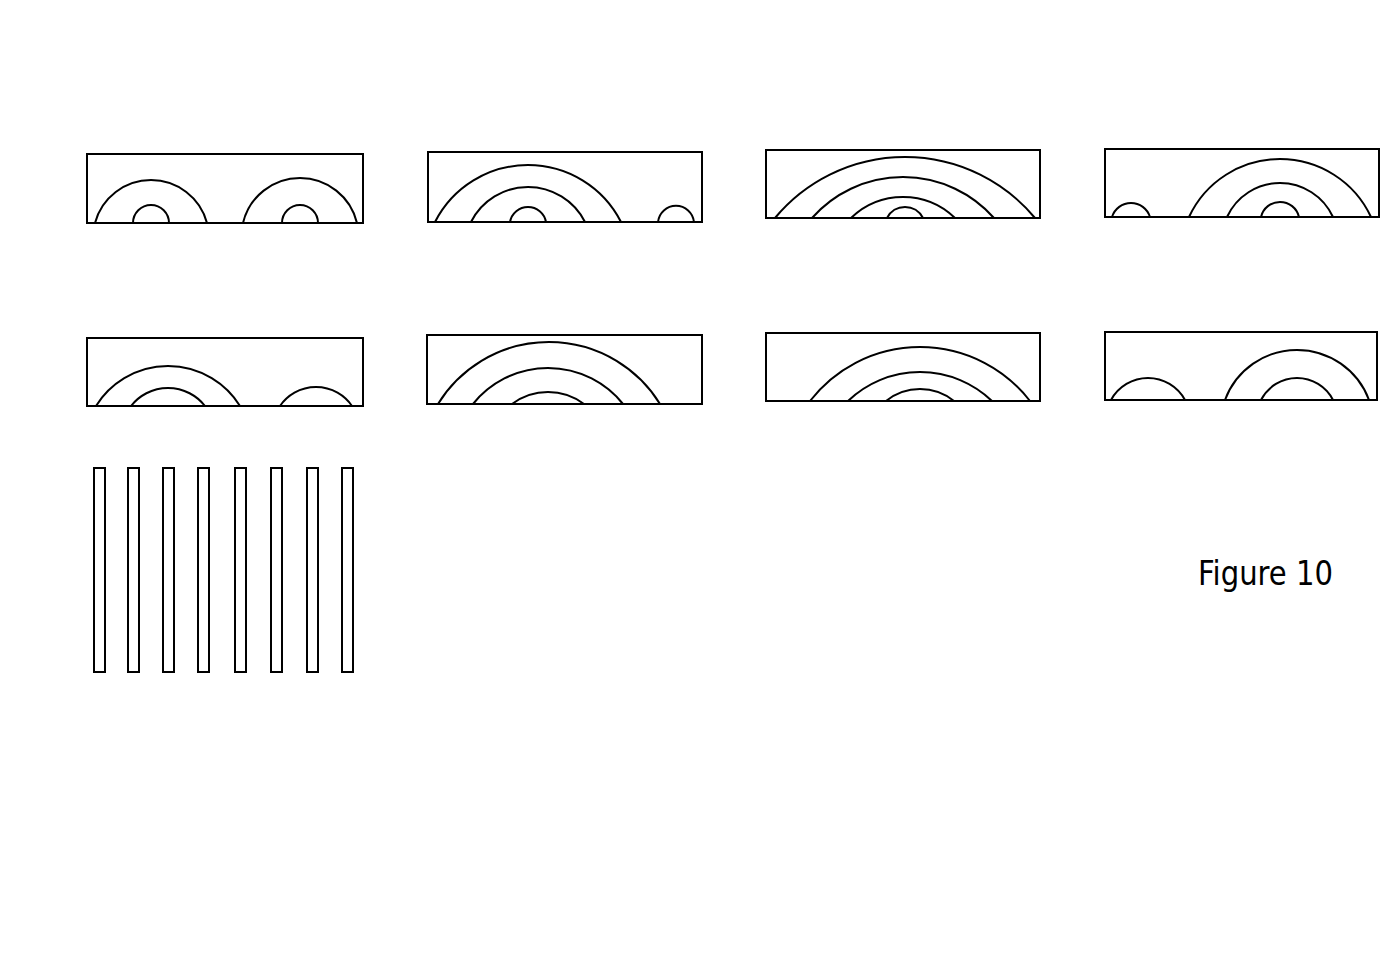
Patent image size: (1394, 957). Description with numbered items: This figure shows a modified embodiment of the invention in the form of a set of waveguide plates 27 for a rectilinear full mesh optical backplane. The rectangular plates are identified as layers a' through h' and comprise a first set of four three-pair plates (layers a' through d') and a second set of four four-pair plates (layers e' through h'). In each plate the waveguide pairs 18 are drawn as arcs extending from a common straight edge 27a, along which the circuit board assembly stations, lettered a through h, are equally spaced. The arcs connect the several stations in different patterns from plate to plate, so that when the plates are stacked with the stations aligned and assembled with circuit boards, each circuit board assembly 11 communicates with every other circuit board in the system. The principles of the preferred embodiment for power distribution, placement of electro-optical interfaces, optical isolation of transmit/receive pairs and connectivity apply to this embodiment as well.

The circuit board assembly 11 is at (98, 663).
The waveguide pairs 18 is at (310, 207).
The set of waveguide plates 27 is at (736, 272).
The common edge 27a is at (707, 223).